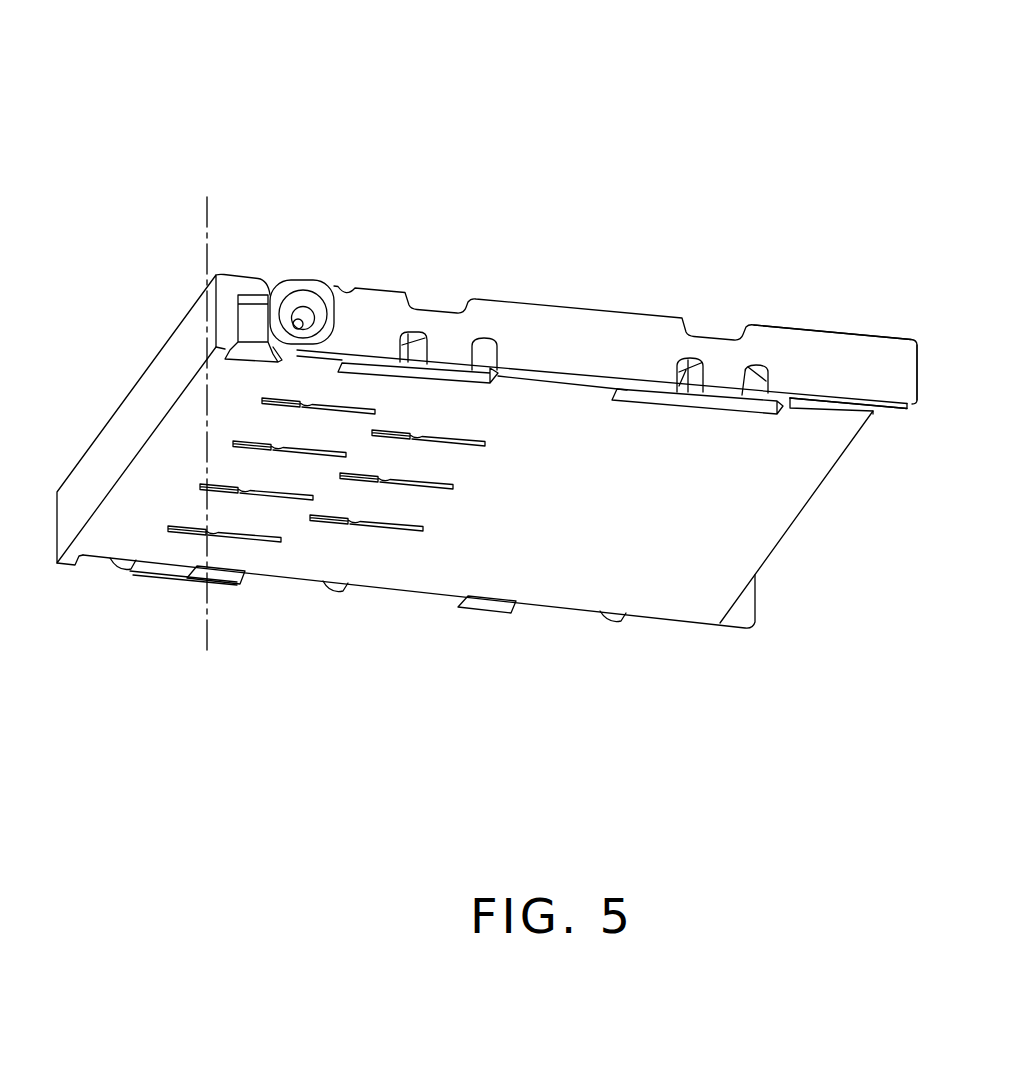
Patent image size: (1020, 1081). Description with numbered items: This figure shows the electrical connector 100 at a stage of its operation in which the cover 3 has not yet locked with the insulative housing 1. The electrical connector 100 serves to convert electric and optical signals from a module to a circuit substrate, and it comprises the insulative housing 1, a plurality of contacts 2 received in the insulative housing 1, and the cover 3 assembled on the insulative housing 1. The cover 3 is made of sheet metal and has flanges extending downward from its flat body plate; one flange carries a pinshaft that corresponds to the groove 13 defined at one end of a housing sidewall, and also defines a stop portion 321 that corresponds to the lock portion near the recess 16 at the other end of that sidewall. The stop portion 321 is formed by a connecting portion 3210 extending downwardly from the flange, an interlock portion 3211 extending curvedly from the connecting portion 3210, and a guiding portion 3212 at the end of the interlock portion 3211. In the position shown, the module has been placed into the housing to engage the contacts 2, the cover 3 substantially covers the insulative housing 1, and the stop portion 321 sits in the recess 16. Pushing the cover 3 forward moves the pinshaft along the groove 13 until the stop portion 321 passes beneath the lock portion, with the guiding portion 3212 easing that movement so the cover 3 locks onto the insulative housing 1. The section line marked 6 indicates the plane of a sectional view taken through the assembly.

The electrical connector 100 is at (499, 48).
The insulative housing 1 is at (687, 590).
The contacts 2 is at (222, 490).
The cover 3 is at (835, 352).
The section line 6- 6 is at (207, 197).
The groove 13 is at (253, 312).
The recess 16 is at (478, 359).
The stop portion 321 is at (783, 426).
The connecting portion 3210 is at (727, 377).
The interlock portion 3211 is at (710, 392).
The guiding portion 3212 is at (682, 383).